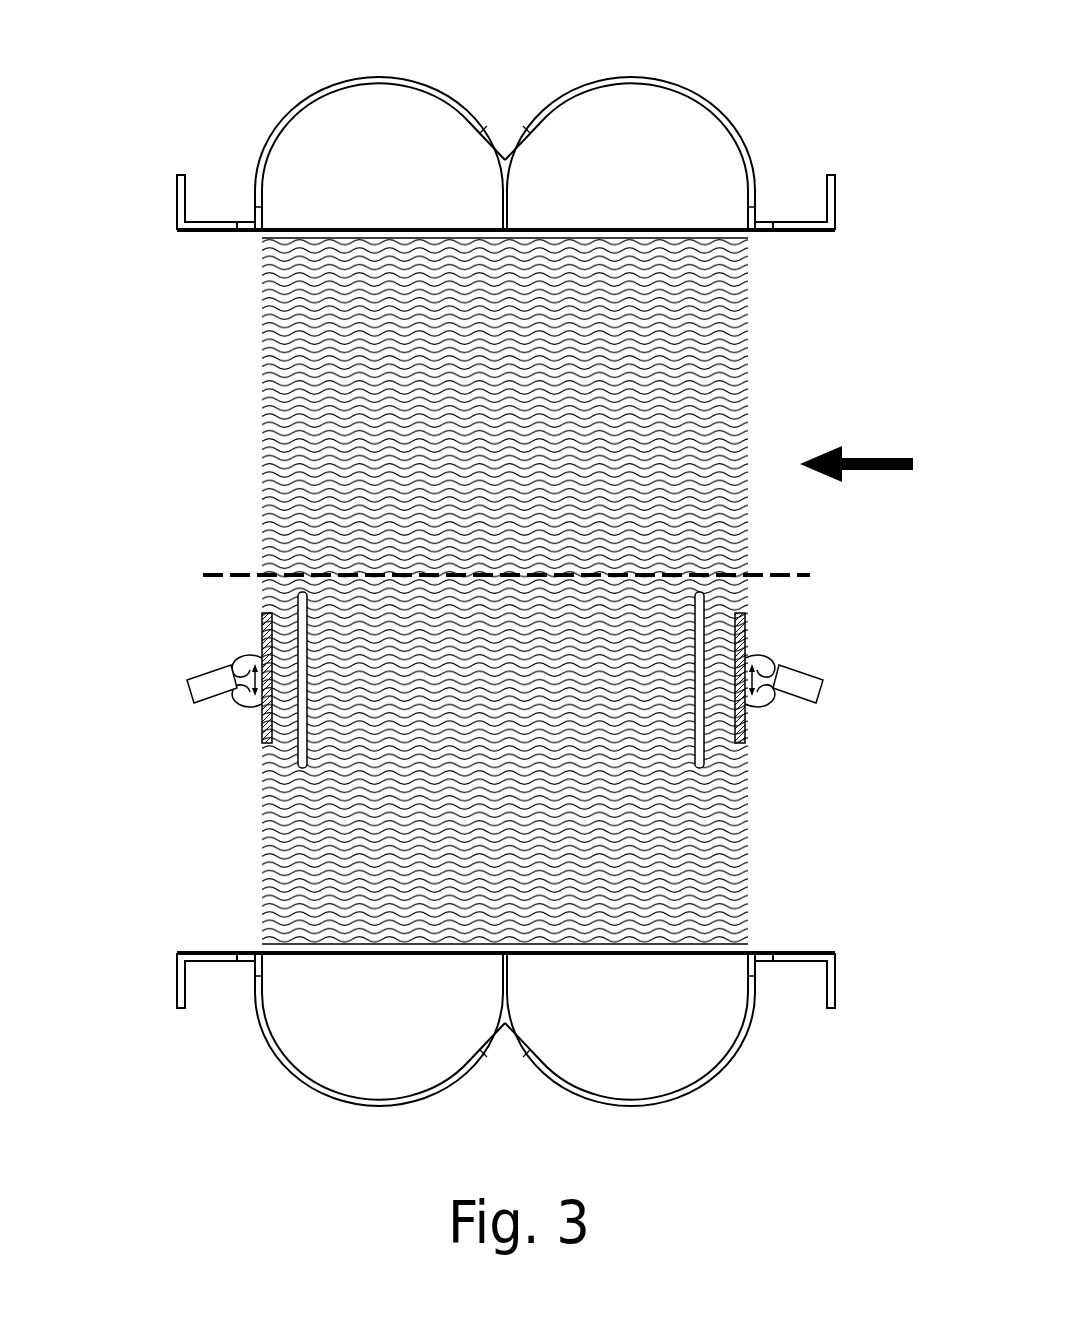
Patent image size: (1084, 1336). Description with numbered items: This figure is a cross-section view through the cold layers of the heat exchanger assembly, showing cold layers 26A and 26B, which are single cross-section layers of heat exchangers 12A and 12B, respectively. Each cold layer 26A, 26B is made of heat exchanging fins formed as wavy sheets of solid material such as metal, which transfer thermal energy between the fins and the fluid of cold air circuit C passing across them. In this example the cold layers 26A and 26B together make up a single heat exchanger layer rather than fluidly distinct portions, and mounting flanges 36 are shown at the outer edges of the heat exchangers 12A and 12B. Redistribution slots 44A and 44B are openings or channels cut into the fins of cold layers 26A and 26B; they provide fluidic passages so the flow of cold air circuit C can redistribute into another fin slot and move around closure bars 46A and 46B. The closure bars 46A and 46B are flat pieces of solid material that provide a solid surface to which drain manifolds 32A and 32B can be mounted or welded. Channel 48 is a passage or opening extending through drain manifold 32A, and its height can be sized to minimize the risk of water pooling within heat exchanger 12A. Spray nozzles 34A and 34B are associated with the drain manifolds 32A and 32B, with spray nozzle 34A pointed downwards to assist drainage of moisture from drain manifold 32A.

The heat exchanger 12A is at (297, 107).
The heat exchanger 12B is at (297, 1077).
The mounting flanges 36 is at (176, 208).
The cold layer 26A is at (531, 418).
The cold layer 26B is at (531, 771).
The redistribution slot 44A is at (702, 772).
The redistribution slot 44B is at (299, 772).
The closure bar 46A is at (746, 628).
The closure bar 46B is at (262, 630).
The drain manifold 32A is at (762, 658).
The drain manifold 32B is at (247, 657).
The spray nozzle 34A is at (820, 692).
The spray nozzle 34B is at (189, 692).
The channel 48 is at (245, 700).
The cold air circuit C is at (868, 457).